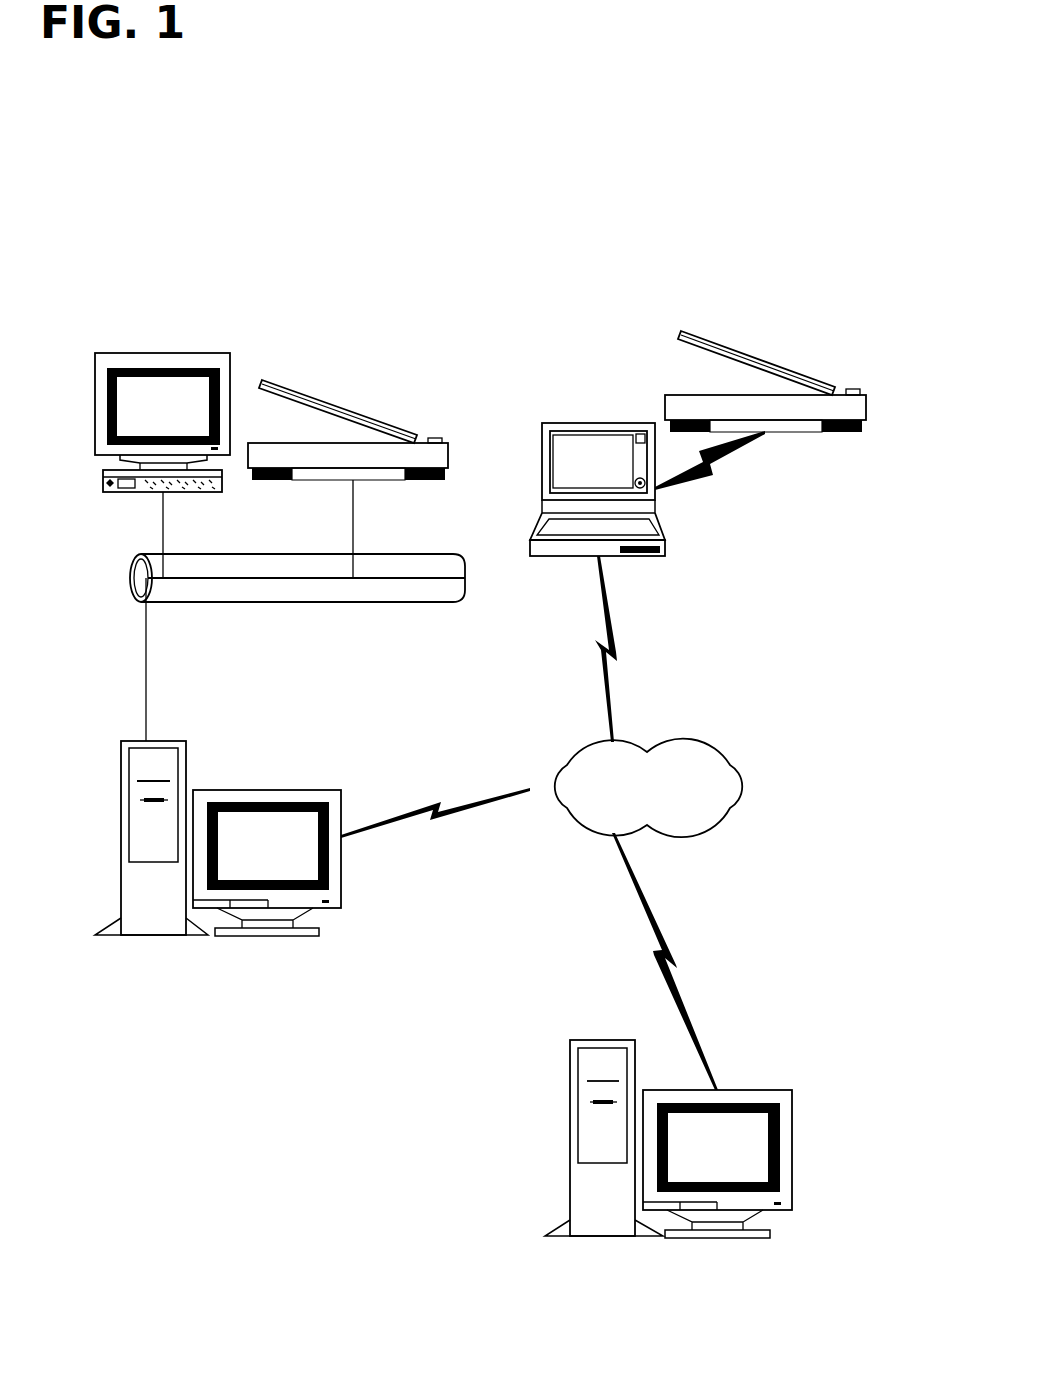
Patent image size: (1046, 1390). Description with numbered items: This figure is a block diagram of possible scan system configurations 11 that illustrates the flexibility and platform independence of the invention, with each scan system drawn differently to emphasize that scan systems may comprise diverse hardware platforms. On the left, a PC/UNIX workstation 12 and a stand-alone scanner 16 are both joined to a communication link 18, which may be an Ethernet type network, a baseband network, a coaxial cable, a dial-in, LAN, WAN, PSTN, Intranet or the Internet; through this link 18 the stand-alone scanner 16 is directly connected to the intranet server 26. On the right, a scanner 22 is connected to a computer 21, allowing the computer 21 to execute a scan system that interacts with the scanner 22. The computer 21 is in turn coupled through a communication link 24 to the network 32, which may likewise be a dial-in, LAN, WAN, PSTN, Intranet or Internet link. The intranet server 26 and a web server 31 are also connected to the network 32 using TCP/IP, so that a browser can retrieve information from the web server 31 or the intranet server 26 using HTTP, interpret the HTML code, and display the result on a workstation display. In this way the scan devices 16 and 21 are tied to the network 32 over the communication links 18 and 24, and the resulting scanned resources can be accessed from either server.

The network system 11 is at (513, 88).
The PC/UNIX workstation 12 is at (95, 420).
The stand-alone scanner 16 is at (448, 455).
The communication link 18 is at (298, 605).
The computer 21 is at (542, 488).
The scanner 22 is at (765, 395).
The communication link 24 is at (598, 558).
The intranet server 26 is at (265, 790).
The web server 31 is at (597, 1040).
The network 32 is at (680, 742).